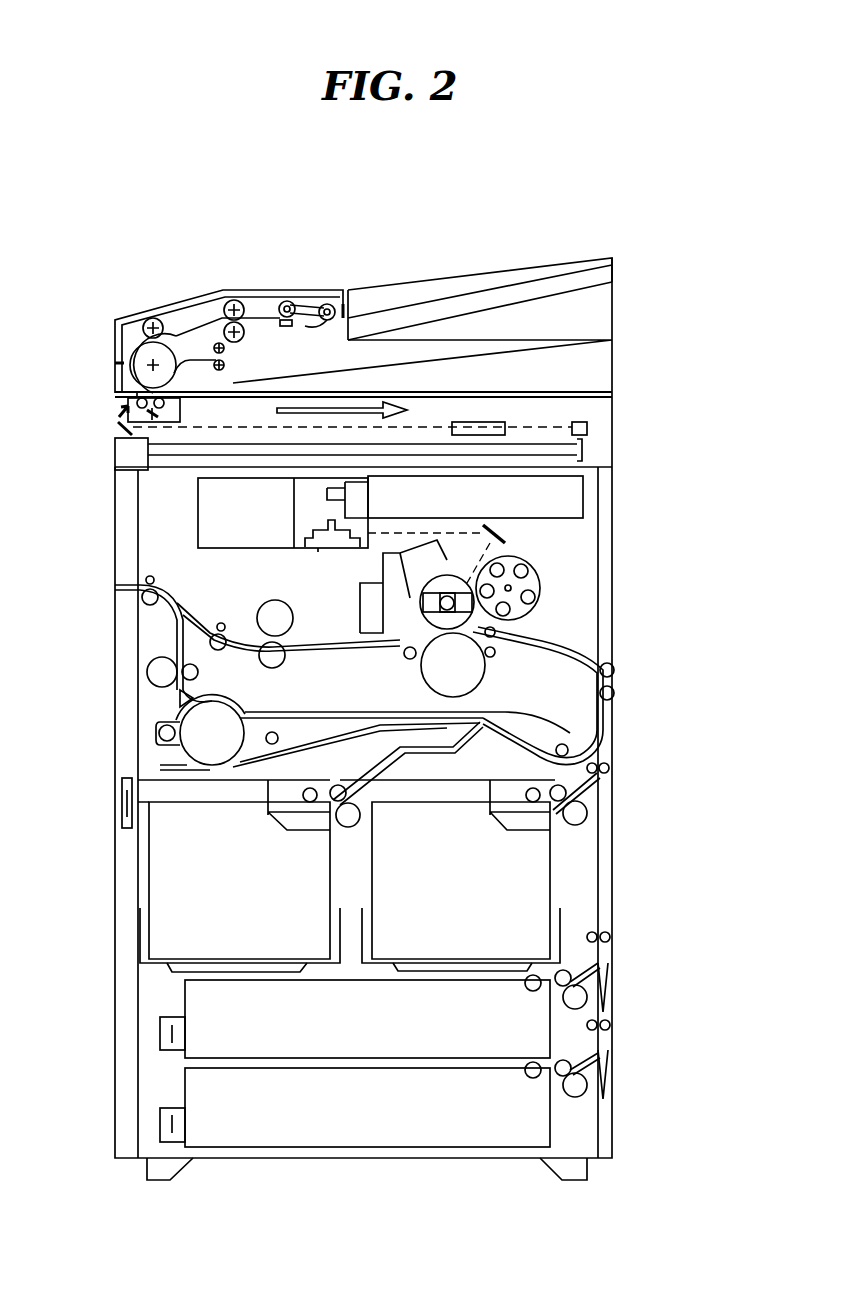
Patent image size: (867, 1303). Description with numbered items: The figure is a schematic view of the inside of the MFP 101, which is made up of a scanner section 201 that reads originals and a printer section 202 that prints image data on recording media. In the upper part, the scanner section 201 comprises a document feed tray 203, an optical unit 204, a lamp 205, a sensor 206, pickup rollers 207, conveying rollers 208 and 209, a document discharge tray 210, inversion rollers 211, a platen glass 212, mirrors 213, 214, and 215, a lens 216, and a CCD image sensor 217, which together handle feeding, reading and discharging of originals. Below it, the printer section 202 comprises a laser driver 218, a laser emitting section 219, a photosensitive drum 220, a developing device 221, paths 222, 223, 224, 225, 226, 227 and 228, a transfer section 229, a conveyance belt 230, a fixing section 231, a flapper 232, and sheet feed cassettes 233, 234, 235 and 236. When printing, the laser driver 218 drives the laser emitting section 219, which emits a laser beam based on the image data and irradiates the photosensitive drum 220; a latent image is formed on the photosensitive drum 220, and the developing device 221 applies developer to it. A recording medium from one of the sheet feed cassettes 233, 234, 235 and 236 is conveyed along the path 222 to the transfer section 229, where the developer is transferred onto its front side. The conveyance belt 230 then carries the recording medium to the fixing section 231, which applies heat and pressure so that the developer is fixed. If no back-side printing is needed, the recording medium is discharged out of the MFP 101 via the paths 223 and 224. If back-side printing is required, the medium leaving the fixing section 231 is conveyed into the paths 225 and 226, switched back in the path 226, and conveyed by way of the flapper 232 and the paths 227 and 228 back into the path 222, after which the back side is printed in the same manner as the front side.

The MFP 101 is at (646, 200).
The scanner section 201 is at (695, 252).
The printer section 202 is at (695, 470).
The document feed tray 203 is at (390, 308).
The optical unit 204 is at (182, 410).
The lamp 205 is at (137, 395).
The sensor 206 is at (339, 293).
The pickup rollers 207 is at (308, 304).
The conveying rollers 208 is at (228, 299).
The conveying rollers 209 is at (148, 318).
The document discharge tray 210 is at (548, 345).
The inversion rollers 211 is at (227, 357).
The platen glass 212 is at (583, 390).
The mirror 213 is at (152, 408).
The mirror 214 is at (118, 412).
The mirror 215 is at (121, 430).
The lens 216 is at (478, 422).
The CCD image sensor 217 is at (588, 427).
The laser driver 218 is at (197, 522).
The laser emitting section 219 is at (318, 548).
The photosensitive drum 220 is at (430, 622).
The developing device 221 is at (535, 578).
The path 222 is at (570, 639).
The path 223 is at (177, 598).
The path 224 is at (127, 593).
The path 225 is at (210, 652).
The path 226 is at (303, 695).
The path 227 is at (214, 770).
The path 228 is at (357, 732).
The transfer section 229 is at (486, 685).
The conveyance belt 230 is at (363, 657).
The fixing section 231 is at (258, 606).
The flapper 232 is at (177, 700).
The sheet feed cassette 233 is at (553, 885).
The sheet feed cassette 234 is at (155, 890).
The sheet feed cassette 235 is at (553, 1040).
The sheet feed cassette 236 is at (553, 1123).